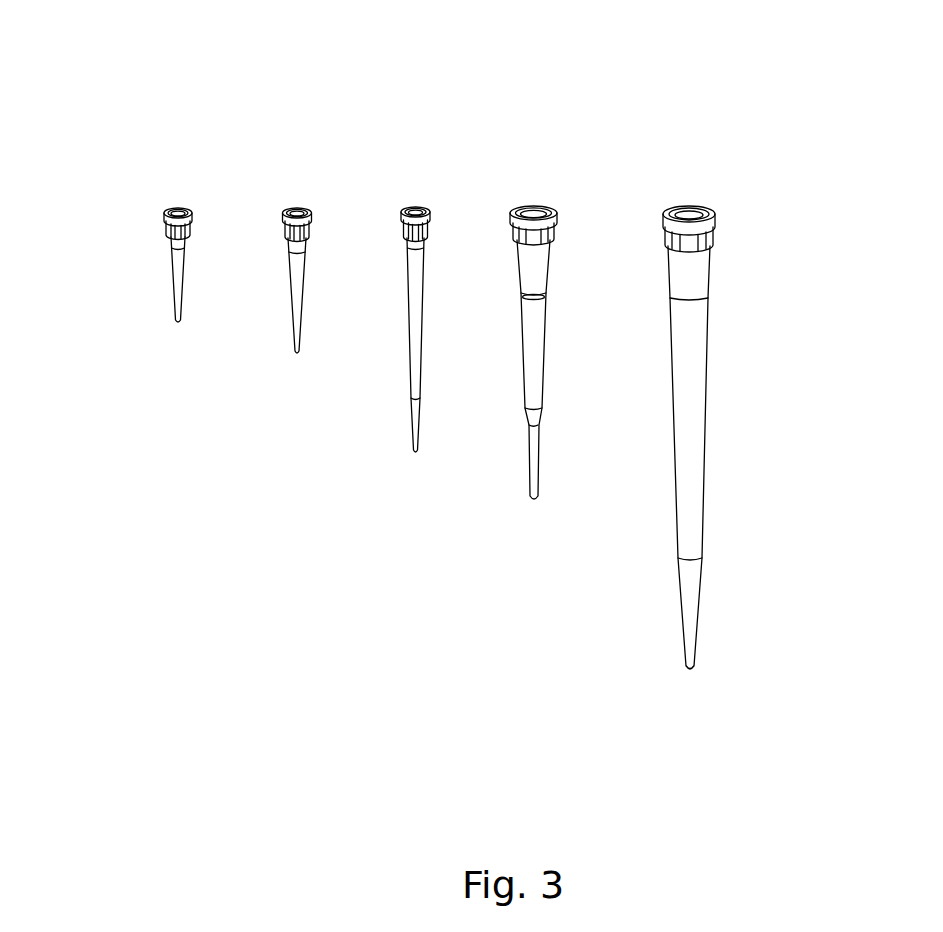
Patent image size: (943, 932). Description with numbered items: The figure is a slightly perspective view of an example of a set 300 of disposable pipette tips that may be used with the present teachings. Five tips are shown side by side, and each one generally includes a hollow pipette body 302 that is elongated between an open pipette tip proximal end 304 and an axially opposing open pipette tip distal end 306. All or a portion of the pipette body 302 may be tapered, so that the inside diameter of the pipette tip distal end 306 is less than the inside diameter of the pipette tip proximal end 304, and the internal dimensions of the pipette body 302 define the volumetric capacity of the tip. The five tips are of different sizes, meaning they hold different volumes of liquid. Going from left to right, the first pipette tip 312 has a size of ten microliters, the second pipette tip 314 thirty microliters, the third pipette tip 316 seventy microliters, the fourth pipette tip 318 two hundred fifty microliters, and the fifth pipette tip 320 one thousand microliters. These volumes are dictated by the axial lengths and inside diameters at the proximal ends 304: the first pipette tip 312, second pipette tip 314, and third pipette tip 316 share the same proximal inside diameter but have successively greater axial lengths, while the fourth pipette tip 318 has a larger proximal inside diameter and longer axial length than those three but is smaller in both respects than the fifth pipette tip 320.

The set of disposable pipette tips 300 is at (80, 102).
The pipette body 302 is at (708, 440).
The pipette tip proximal end 304 is at (713, 210).
The pipette tip distal end 306 is at (693, 672).
The first pipette tip 312 is at (148, 302).
The second pipette tip 314 is at (262, 393).
The third pipette tip 316 is at (382, 456).
The fourth pipette tip 318 is at (515, 503).
The fifth pipette tip 320 is at (636, 622).